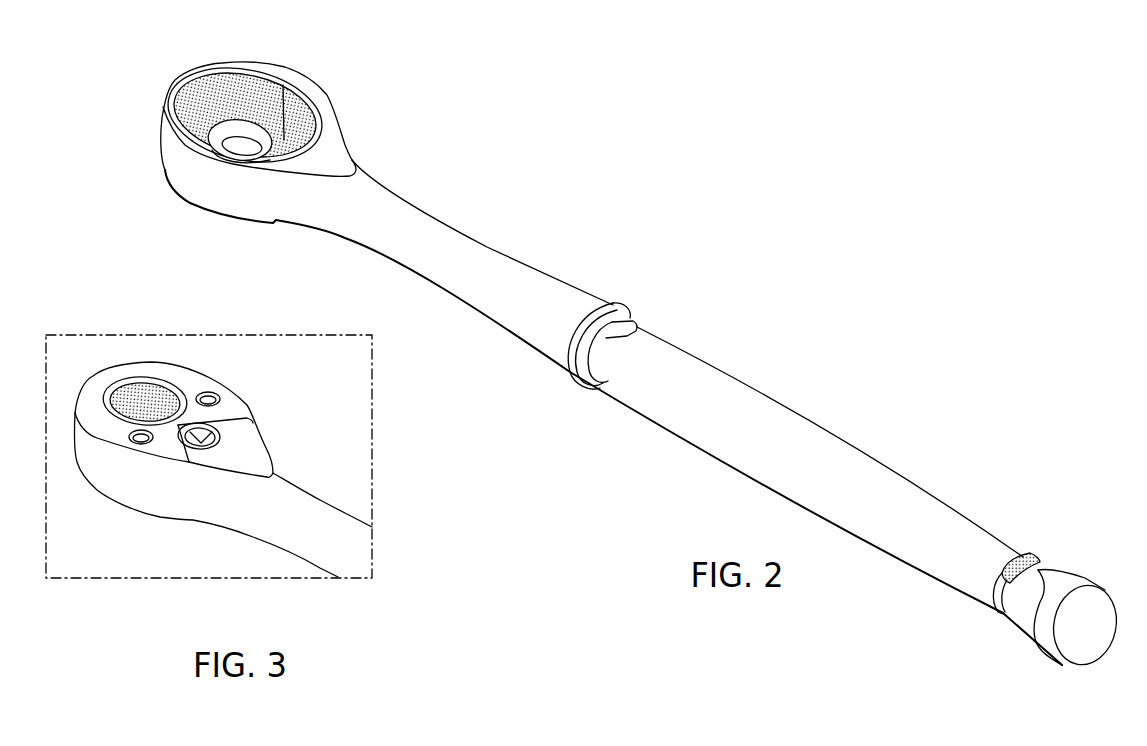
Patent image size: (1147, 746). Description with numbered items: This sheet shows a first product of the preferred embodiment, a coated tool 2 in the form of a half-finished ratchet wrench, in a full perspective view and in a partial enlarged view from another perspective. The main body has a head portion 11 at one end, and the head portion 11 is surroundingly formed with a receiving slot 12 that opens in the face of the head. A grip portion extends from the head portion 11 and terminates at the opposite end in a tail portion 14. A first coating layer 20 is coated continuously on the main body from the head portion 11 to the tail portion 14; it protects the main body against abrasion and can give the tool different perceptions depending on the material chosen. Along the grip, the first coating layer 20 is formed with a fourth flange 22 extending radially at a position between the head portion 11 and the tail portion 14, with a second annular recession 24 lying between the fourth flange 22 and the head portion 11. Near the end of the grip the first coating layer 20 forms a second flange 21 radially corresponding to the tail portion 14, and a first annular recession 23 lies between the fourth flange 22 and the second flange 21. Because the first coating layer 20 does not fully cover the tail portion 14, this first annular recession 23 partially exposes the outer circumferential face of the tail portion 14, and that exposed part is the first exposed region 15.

In FIG. 2, the ratchet wrench 2 is at (772, 160).
In FIG. 3, the head portion 11 is at (110, 352).
In FIG. 2, the receiving slot 12 is at (202, 93).
In FIG. 2, the tail portion 14 is at (1026, 530).
In FIG. 2, the first exposed region 15 is at (1028, 557).
In FIG. 2, the first coating layer 20 is at (452, 188).
In FIG. 2, the second flange 21 is at (1037, 628).
In FIG. 2, the fourth flange 22 is at (632, 318).
In FIG. 2, the first annular recession 23 is at (995, 597).
In FIG. 2, the second annular recession 24 is at (570, 353).